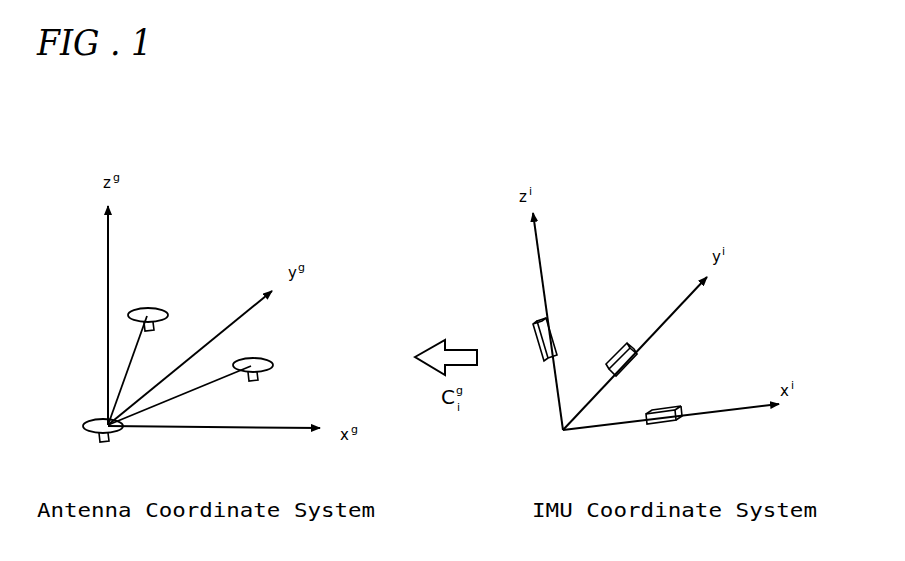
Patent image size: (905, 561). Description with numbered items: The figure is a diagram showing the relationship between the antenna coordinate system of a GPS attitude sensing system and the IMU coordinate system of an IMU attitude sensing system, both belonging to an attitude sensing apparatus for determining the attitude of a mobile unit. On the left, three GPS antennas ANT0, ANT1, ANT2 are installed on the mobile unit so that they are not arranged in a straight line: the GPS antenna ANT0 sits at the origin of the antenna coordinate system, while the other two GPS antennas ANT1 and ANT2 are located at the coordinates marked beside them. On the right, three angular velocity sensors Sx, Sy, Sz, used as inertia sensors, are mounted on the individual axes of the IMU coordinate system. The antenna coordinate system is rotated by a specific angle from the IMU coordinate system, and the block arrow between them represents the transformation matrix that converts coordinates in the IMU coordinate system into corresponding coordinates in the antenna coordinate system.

The GPS antenna ANT0 is at (129, 443).
The GPS antenna ANT1 is at (251, 381).
The GPS antenna ANT2 is at (183, 352).
The angular velocity sensor Sx is at (669, 425).
The angular velocity sensor Sy is at (621, 356).
The angular velocity sensor Sz is at (548, 337).